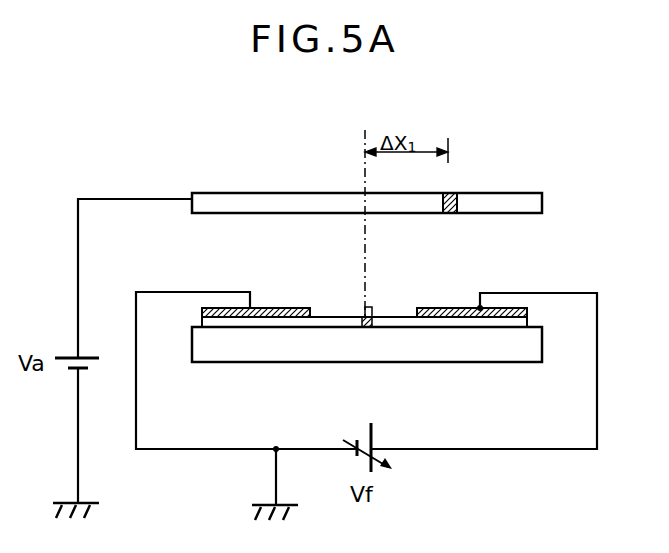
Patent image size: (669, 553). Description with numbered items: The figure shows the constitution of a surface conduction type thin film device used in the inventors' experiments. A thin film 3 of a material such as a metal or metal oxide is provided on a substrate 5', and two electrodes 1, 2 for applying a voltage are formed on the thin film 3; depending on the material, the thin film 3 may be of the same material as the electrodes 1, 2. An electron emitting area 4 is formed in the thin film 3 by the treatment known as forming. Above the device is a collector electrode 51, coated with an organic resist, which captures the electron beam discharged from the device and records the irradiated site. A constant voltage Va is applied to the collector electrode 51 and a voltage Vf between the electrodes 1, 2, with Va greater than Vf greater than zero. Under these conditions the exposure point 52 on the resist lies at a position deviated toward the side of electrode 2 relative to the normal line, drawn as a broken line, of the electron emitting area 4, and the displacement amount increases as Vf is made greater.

The electrode 1 is at (268, 308).
The electrode 2 is at (432, 308).
The thin film 3 is at (202, 322).
The electron emitting area 4 is at (362, 318).
The substrate 5' is at (367, 369).
The collector electrode 51 is at (542, 205).
The exposure point 52 is at (452, 193).